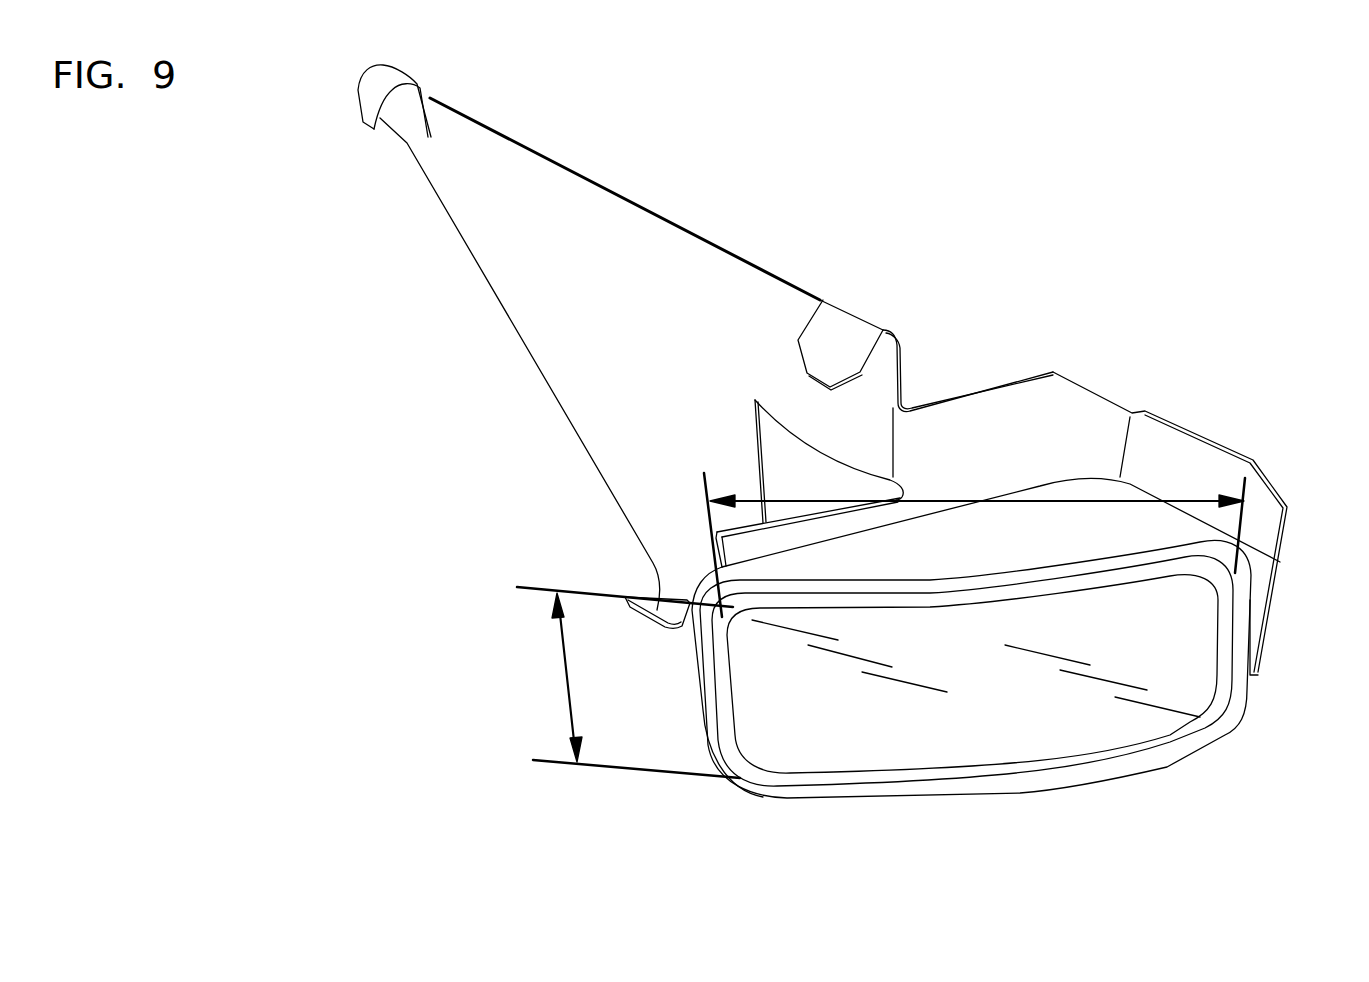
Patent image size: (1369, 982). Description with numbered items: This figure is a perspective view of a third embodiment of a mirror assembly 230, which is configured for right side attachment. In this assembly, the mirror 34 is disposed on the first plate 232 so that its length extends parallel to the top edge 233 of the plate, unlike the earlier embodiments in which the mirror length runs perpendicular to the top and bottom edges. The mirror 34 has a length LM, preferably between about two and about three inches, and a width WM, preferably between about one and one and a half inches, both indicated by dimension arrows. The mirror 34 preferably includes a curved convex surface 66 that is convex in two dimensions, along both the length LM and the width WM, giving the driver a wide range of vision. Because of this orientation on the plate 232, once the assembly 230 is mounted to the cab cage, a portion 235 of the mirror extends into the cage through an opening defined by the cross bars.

The mirror assembly 230 is at (1113, 176).
The first plate 232 is at (1092, 437).
The top edge 233 is at (978, 391).
The portion of the mirror 235 is at (780, 570).
The mirror 34 is at (1255, 602).
The curved convex surface 66 is at (1030, 738).
The length LM is at (1090, 497).
The width WM is at (563, 678).